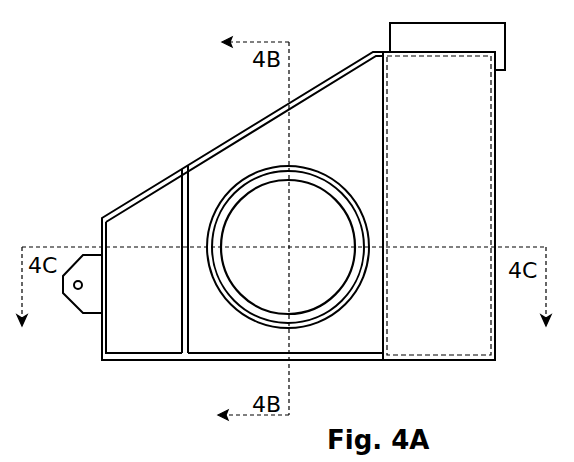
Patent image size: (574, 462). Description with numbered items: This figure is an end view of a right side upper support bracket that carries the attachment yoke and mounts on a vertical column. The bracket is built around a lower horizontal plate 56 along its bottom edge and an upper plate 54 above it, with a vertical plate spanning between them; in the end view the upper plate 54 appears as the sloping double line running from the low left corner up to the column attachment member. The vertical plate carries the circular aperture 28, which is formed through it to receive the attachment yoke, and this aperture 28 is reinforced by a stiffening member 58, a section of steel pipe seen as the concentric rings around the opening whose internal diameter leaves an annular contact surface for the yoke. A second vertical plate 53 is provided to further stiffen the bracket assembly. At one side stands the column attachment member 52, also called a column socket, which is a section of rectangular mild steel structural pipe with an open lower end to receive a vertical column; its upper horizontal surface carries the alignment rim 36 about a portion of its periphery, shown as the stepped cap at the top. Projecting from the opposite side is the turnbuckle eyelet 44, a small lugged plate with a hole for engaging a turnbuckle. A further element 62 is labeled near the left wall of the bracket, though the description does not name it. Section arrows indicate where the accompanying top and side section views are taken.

The circular aperture 28 is at (343, 218).
The alignment rim 36 is at (494, 40).
The turnbuckle eyelet 44 is at (88, 314).
The column attachment member 52 is at (495, 188).
The second vertical plate 53 is at (314, 141).
The upper plate 54 is at (258, 122).
The lower horizontal plate 56 is at (330, 361).
The stiffening member 58 is at (250, 318).
The wall 62 is at (118, 223).